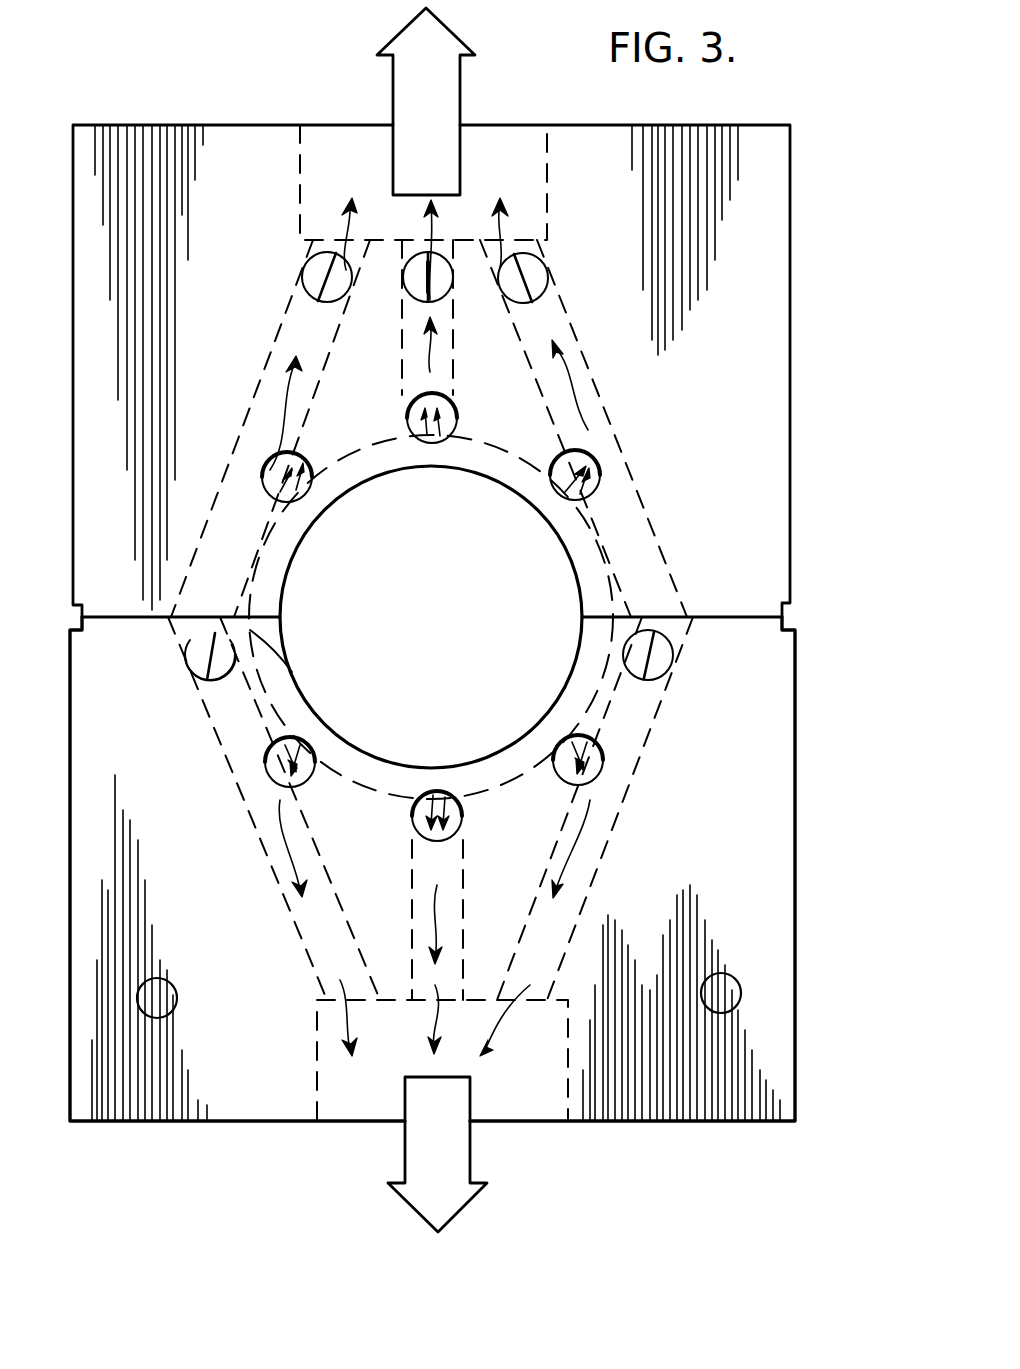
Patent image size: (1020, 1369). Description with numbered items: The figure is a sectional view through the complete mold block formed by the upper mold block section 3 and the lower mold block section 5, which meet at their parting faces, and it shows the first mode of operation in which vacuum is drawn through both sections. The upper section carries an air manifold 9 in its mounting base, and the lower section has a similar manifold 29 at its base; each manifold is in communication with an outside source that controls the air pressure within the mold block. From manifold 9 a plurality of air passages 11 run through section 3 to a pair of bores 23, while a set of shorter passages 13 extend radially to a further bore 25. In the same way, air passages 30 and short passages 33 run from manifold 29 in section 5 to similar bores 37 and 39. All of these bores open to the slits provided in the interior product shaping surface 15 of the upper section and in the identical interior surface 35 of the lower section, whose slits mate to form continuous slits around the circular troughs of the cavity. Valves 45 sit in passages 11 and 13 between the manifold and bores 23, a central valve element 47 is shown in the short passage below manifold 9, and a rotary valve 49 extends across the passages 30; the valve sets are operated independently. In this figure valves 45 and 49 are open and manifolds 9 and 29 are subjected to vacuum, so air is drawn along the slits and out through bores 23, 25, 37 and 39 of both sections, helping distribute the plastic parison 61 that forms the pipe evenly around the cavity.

The mold block section 3 is at (773, 463).
The mold block section 5 is at (760, 783).
The air manifold 9 is at (528, 145).
The air passages 11 is at (270, 366).
The shorter passages 13 is at (445, 368).
The interior product shaping surface 15 is at (453, 486).
The bores 23 is at (306, 458).
The bore 25 is at (428, 442).
The manifold 29 is at (533, 1100).
The air passages 30 is at (278, 850).
The short passages 33 is at (462, 867).
The interior surface 35 is at (426, 728).
The bores 37 is at (268, 774).
The bore 39 is at (437, 790).
The valves 45 is at (304, 265).
The central pin 47 is at (440, 292).
The rotary valve 49 is at (198, 668).
The plastic parison 61 is at (292, 672).